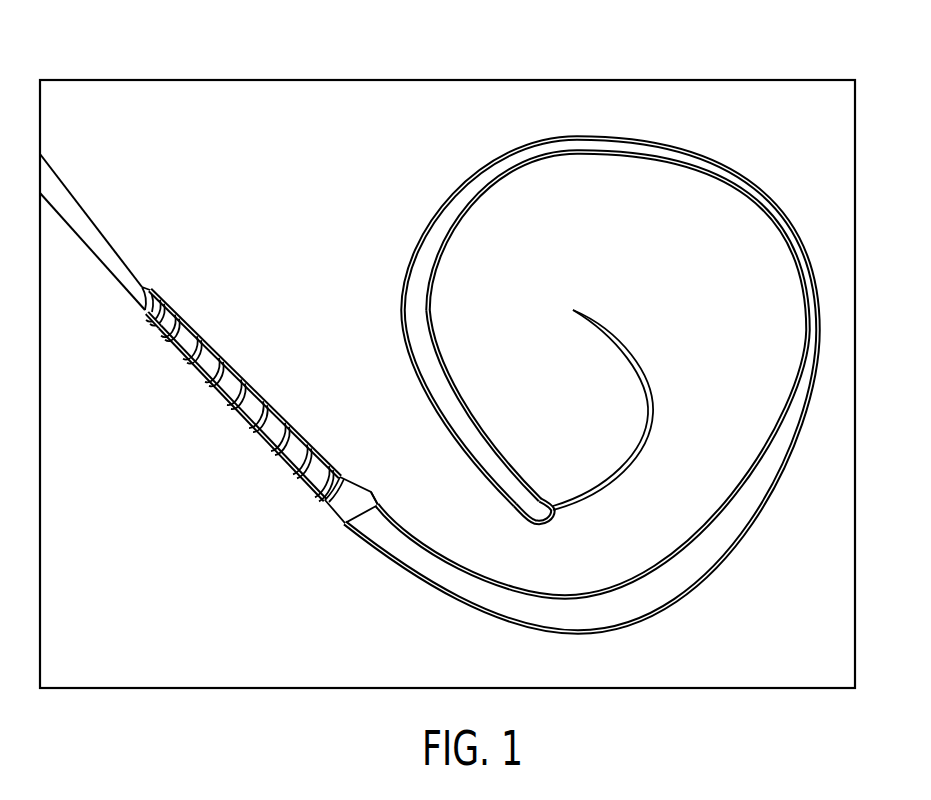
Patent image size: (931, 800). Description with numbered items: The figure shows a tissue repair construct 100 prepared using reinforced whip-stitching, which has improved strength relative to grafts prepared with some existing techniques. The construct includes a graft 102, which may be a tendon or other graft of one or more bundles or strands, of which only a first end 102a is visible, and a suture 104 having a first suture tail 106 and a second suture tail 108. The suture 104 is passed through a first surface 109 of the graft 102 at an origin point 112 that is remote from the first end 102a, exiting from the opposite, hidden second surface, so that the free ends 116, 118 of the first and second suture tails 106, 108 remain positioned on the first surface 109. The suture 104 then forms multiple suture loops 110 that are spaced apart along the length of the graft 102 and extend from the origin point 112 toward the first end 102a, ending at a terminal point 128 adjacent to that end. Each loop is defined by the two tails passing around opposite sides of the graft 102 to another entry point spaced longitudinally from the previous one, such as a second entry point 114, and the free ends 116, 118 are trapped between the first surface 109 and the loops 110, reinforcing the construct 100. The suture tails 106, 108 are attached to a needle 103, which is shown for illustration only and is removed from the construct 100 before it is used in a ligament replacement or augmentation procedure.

The tissue repair construct 100 is at (618, 72).
The graft 102 is at (92, 233).
The first surface 109 is at (98, 255).
The origin point 112 is at (143, 285).
The suture loops 110 is at (233, 376).
The second entry point 114 is at (191, 338).
The first free end 116 is at (166, 300).
The second free end 118 is at (149, 318).
The terminal point 128 is at (341, 477).
The first end 102a is at (376, 476).
The suture 104 is at (581, 357).
The second suture tail 108 is at (420, 370).
The first suture tail 106 is at (490, 436).
The needle 103 is at (634, 351).